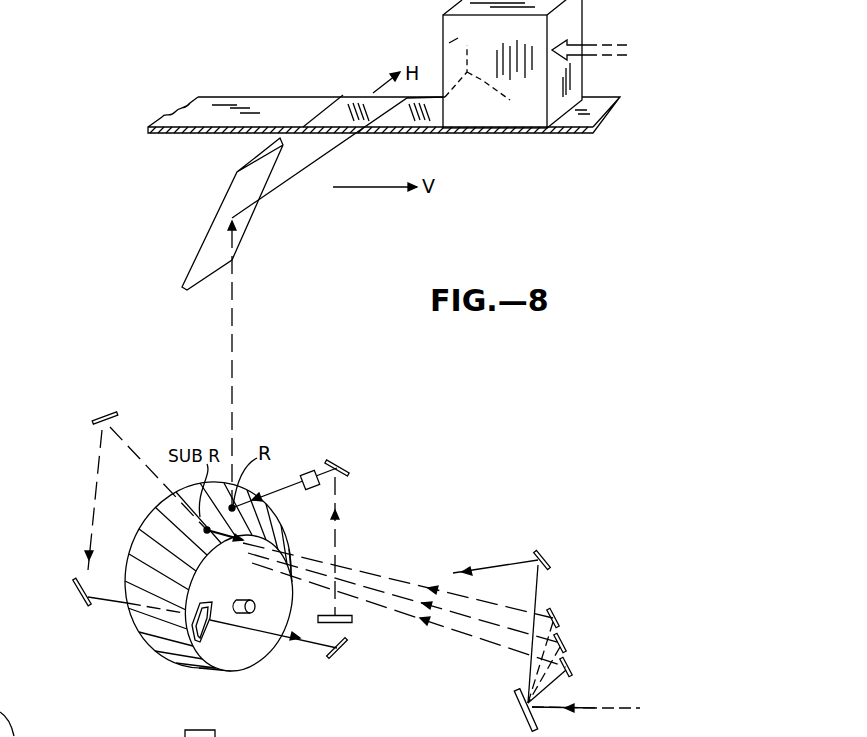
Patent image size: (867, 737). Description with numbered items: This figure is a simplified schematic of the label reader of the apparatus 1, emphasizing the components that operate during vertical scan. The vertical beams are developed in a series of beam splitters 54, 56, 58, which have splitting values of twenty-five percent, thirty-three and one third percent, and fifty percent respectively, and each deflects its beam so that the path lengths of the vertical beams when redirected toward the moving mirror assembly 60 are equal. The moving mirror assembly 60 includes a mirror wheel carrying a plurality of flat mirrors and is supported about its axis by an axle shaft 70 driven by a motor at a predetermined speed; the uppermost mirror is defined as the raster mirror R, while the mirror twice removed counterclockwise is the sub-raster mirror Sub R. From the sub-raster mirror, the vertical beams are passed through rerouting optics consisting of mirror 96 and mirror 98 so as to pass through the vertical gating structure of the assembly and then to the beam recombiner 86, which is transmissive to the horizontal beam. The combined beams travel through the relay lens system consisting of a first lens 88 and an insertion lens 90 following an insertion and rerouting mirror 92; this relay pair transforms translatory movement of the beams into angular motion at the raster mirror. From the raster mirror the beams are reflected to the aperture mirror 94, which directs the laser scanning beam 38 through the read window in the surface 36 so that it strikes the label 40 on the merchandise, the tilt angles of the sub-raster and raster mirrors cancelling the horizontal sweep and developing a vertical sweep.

The transparent slab / photoconductor belt 36 is at (296, 107).
The laser scanning beam 38 is at (434, 79).
The label reader (FIG. 1 apparatus) 1 is at (459, 63).
The label 40 is at (503, 92).
The aperture mirror 94 is at (237, 222).
The mirror 96 is at (107, 412).
The mirror 98 is at (80, 593).
The axle shaft 70 is at (250, 600).
The insertion lens 90 is at (308, 470).
The insertion and rerouting mirror 92 is at (342, 458).
The first lens 88 is at (352, 620).
The beam recombiner 86 is at (338, 654).
The moving mirror assembly 60 is at (547, 557).
The beam splitter 58 is at (557, 615).
The beam splitter 56 is at (564, 642).
The beam splitter 54 is at (569, 666).